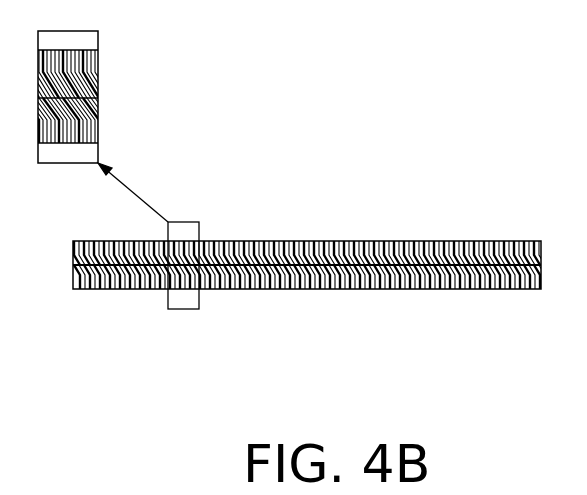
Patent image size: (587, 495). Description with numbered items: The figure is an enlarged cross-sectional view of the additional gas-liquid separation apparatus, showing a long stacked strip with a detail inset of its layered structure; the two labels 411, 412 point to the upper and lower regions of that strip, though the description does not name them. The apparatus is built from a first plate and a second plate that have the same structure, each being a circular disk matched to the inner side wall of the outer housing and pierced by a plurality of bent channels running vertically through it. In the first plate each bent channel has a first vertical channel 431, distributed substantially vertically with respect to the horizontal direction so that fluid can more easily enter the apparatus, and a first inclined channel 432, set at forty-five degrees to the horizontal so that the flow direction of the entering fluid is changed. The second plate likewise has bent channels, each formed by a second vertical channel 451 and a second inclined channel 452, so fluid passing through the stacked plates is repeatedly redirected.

The first layer of composite sheet 411 is at (415, 240).
The second layer of composite sheet 412 is at (448, 240).
The first vertical channel 431 is at (82, 55).
The first inclined channel 432 is at (80, 70).
The second vertical channel 451 is at (72, 136).
The second inclined channel 452 is at (80, 108).